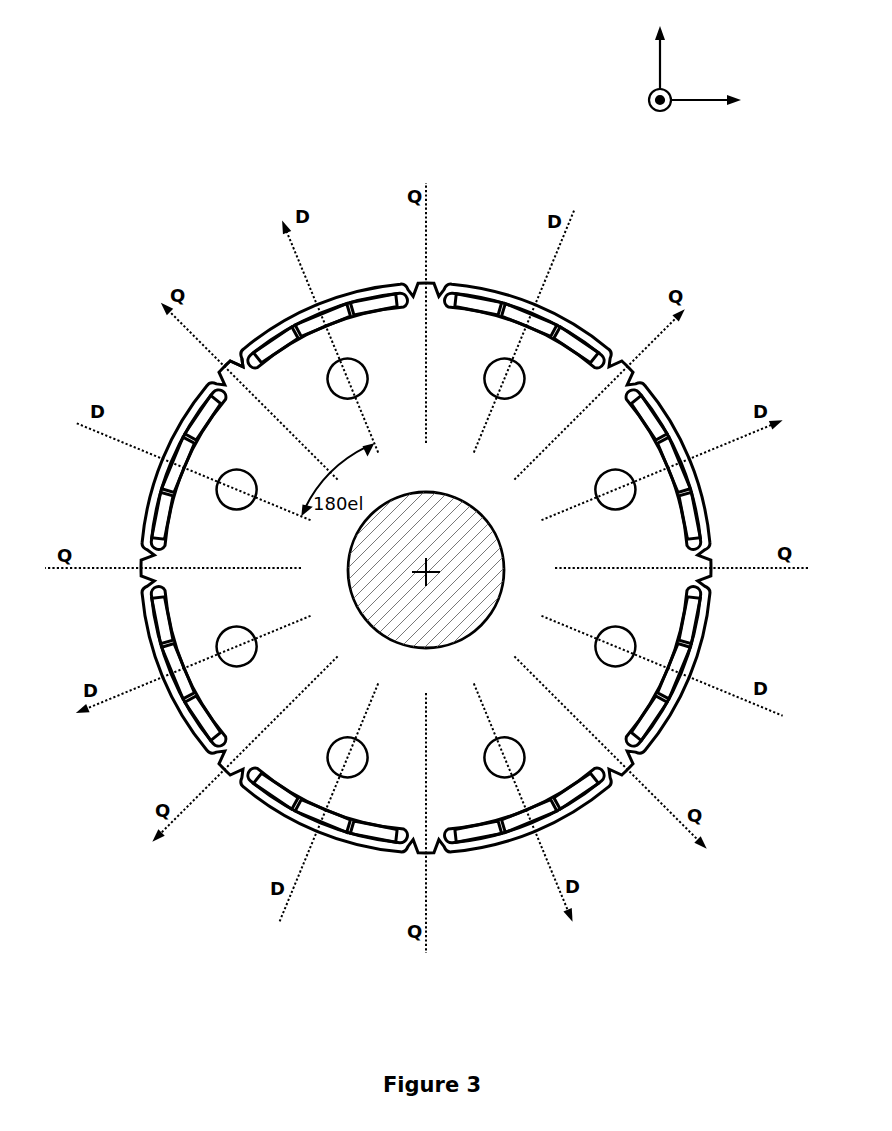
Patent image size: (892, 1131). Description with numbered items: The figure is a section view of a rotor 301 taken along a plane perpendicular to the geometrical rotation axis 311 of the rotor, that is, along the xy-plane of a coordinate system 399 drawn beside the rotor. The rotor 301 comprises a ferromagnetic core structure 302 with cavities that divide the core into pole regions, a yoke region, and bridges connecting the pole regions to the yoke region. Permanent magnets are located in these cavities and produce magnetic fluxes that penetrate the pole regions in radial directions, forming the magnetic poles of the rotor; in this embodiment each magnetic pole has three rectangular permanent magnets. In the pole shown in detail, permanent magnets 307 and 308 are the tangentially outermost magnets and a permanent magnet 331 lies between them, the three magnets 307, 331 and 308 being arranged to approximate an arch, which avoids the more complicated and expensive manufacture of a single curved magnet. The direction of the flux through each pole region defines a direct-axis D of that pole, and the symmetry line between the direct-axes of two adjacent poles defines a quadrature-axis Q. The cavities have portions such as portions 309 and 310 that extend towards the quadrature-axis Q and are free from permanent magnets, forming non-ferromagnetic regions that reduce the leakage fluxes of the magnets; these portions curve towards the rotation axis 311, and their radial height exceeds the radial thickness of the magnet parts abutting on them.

The rotor 301 is at (500, 280).
The ferromagnetic core structure 302 is at (463, 482).
The permanent magnet 307 is at (283, 340).
The permanent magnet 308 is at (376, 302).
The portion of cavity 309 is at (252, 344).
The portion of cavity 310 is at (406, 297).
The geometrical rotation axis 311 is at (436, 570).
The permanent magnet 331 is at (308, 325).
The coordinate system 399 is at (624, 62).